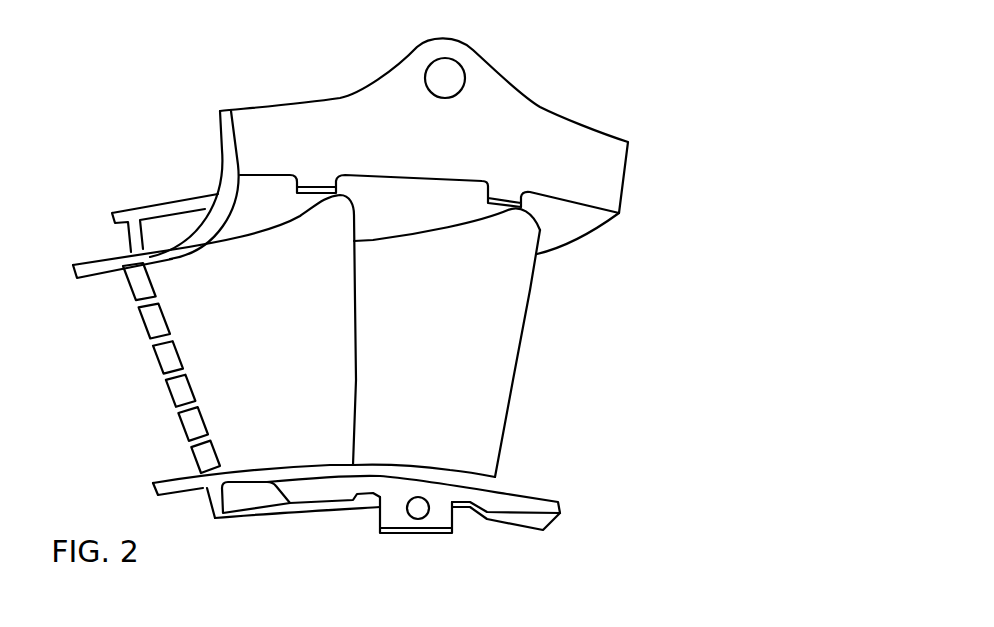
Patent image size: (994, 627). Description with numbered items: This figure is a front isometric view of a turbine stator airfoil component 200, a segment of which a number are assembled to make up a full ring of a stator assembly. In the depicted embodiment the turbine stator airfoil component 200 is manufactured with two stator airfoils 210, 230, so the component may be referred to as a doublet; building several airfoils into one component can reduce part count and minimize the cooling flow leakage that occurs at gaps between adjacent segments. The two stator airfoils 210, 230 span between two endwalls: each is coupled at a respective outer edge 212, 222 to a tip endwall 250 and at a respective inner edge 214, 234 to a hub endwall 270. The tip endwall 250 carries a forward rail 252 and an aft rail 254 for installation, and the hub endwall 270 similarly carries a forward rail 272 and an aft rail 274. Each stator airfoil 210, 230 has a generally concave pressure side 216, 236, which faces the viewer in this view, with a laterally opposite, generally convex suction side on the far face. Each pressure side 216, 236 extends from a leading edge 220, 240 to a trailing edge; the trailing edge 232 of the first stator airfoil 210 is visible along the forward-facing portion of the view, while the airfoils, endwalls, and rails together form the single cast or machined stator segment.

The turbine stator airfoil component 200 is at (576, 66).
The stator airfoil 210 is at (148, 327).
The outer edge 212 is at (242, 243).
The inner edge 214 is at (282, 465).
The pressure side 216 is at (258, 364).
The leading edge 220 is at (356, 298).
The outer edge 222 is at (423, 239).
The stator airfoil 230 is at (514, 294).
The trailing edge 232 is at (161, 379).
The inner edge 234 is at (437, 462).
The pressure side 236 is at (407, 373).
The leading edge 240 is at (515, 363).
The tip endwall 250 is at (588, 227).
The forward rail 252 is at (561, 118).
The aft rail 254 is at (186, 194).
The hub endwall 270 is at (566, 514).
The forward rail 272 is at (415, 539).
The aft rail 274 is at (228, 520).